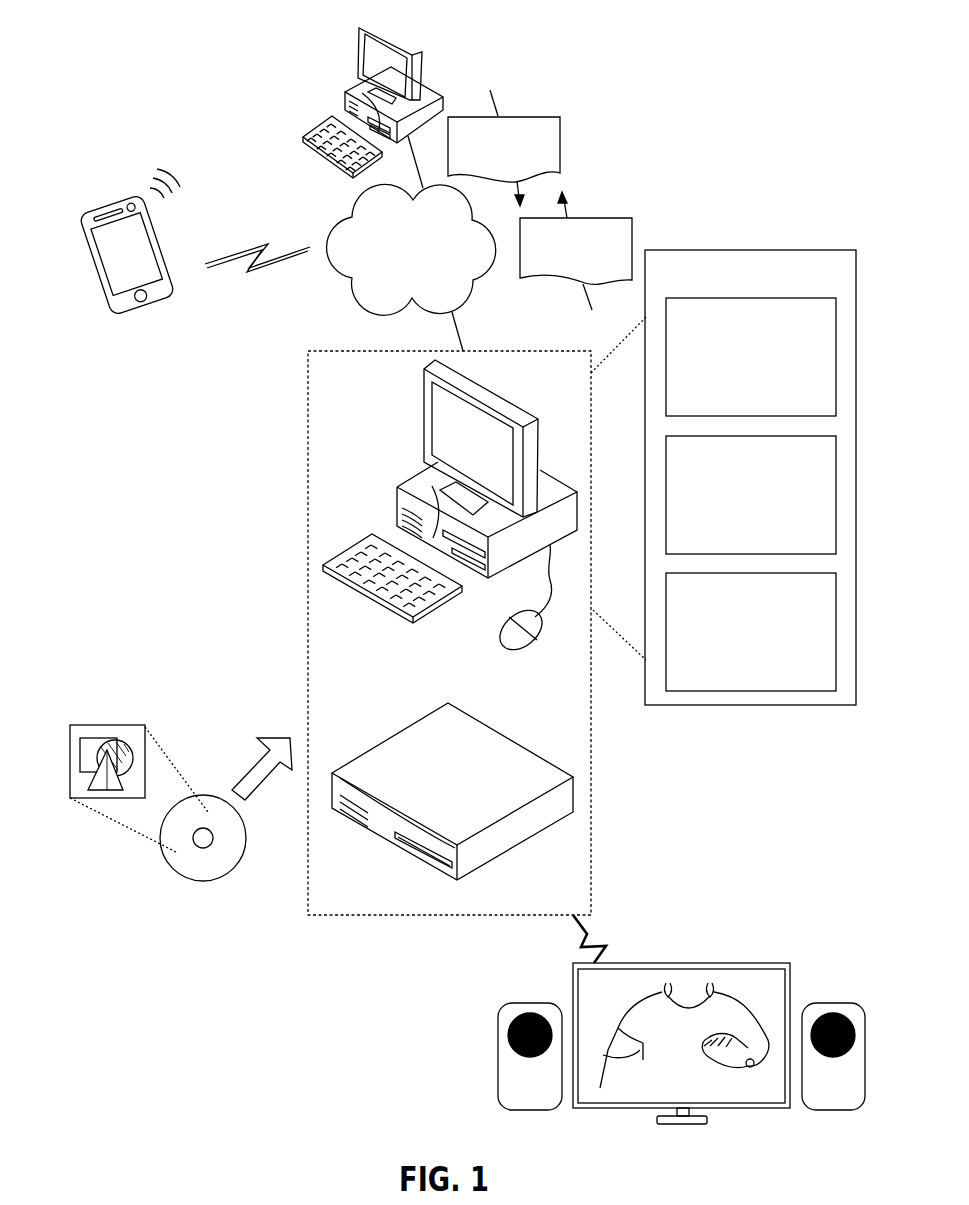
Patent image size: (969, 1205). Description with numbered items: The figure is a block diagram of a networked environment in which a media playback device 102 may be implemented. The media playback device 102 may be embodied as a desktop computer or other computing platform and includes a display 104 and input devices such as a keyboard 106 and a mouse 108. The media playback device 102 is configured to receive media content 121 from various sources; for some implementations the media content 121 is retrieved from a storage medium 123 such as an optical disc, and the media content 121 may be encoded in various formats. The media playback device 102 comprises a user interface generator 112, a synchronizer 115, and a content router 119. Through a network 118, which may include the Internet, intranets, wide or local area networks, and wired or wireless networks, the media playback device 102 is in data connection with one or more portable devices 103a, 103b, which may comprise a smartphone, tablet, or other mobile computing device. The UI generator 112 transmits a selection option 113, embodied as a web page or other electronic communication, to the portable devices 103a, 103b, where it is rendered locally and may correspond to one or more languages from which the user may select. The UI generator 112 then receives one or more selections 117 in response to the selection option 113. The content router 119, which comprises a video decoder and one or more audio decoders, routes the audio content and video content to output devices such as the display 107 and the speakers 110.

The media playback device 102 is at (736, 281).
The portable device 103a is at (363, 25).
The portable device 103b is at (160, 246).
The display 104 is at (418, 419).
The keyboard 106 is at (378, 607).
The display 107 is at (663, 963).
The mouse 108 is at (502, 648).
The speakers 110 is at (510, 1003).
The UI generator 112 is at (737, 378).
The selection option 113 is at (591, 267).
The synchronizer 115 is at (737, 517).
The selection 117 is at (493, 166).
The network 118 is at (397, 271).
The content router 119 is at (737, 668).
The media content 121 is at (110, 725).
The storage medium 123 is at (245, 834).